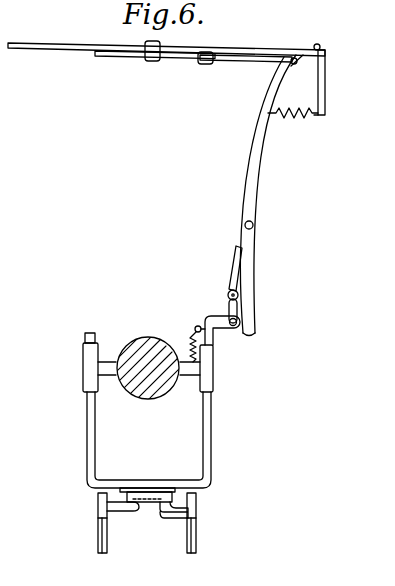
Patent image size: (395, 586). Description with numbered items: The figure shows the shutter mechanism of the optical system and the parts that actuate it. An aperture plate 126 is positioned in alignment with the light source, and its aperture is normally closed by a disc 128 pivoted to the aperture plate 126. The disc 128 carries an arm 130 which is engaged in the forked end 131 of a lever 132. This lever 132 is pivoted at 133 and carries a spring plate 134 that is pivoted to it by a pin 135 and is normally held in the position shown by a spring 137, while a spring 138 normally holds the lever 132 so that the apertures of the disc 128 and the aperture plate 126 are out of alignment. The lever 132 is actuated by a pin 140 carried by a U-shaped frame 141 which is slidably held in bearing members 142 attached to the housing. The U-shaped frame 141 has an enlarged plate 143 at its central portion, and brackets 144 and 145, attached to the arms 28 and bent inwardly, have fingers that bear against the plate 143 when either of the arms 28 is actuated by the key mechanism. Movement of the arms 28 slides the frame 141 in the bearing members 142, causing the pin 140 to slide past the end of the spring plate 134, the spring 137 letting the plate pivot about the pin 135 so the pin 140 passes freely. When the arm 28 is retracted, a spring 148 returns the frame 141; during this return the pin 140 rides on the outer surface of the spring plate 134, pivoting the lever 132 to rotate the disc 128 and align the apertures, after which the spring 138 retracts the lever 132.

The aperture plate 126 is at (61, 44).
The disc 128 is at (137, 58).
The arm 130 is at (247, 62).
The forked end 131 is at (297, 52).
The lever 132 is at (257, 135).
The pivot 133 is at (253, 225).
The spring plate 134 is at (233, 260).
The pin 135 is at (239, 295).
The spring 137 is at (238, 309).
The spring 138 is at (288, 116).
The pin 140 is at (234, 328).
The U-shaped frame 141 is at (211, 434).
The bearing members 142 is at (83, 368).
The enlarged plate 143 is at (138, 487).
The bracket 144 is at (113, 512).
The bracket 145 is at (168, 518).
The spring 148 is at (193, 336).
The arms 28 is at (98, 531).